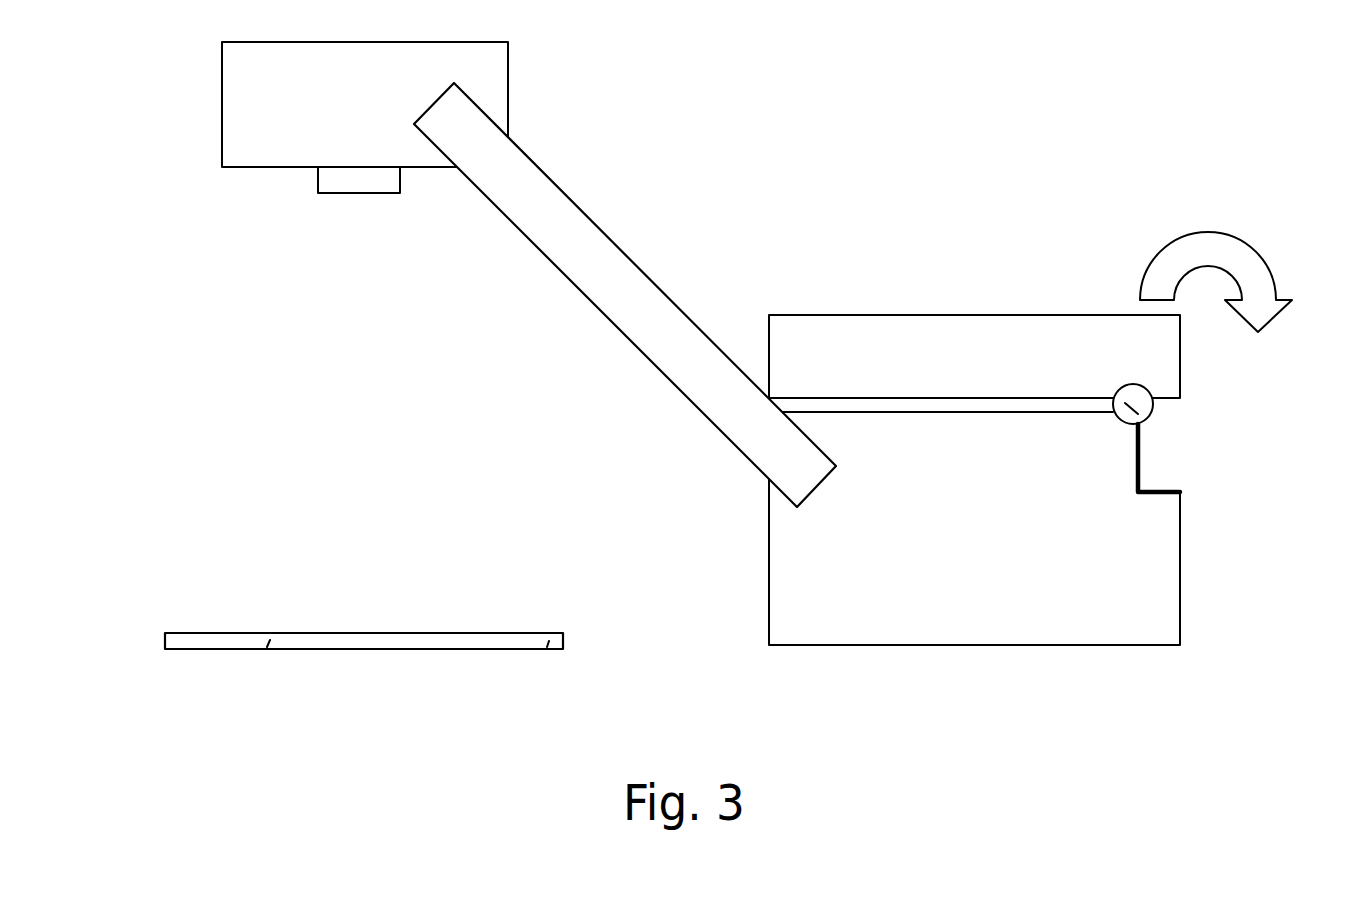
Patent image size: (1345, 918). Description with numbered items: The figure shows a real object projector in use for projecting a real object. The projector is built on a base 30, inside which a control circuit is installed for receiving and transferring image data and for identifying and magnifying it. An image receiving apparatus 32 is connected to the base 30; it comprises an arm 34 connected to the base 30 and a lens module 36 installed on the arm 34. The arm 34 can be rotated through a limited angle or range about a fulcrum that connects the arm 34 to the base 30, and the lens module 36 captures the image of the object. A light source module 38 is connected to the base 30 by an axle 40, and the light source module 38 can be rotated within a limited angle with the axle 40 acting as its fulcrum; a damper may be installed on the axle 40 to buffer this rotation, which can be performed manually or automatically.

The base 30 is at (797, 550).
The image receiving apparatus 32 is at (578, 138).
The arm 34 is at (713, 400).
The lens module 36 is at (310, 123).
The light source module 38 is at (1003, 357).
The axle 40 is at (1148, 415).